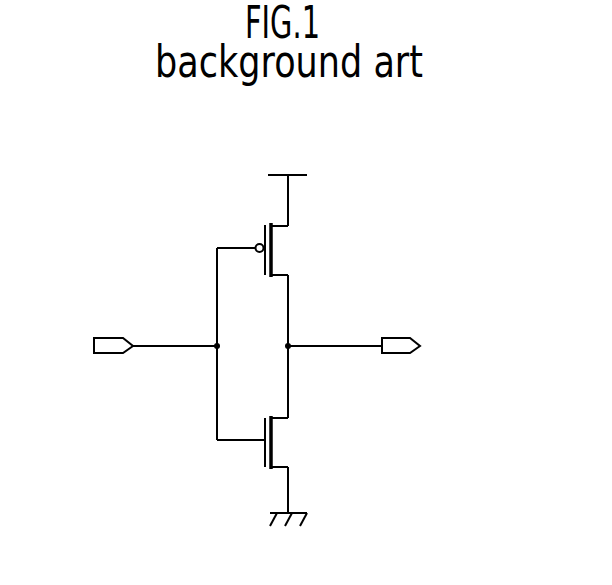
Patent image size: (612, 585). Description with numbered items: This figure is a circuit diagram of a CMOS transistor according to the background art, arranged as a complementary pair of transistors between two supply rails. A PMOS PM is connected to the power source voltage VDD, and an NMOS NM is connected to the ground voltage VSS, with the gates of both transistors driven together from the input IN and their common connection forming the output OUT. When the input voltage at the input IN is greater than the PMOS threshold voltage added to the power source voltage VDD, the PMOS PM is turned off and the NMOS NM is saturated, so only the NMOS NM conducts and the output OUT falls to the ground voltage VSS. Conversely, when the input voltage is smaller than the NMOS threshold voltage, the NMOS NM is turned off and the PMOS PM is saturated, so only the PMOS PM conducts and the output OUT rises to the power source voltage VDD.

The power source voltage VDD is at (287, 183).
The PMOS PM is at (271, 250).
The NMOS NM is at (272, 442).
The input IN is at (142, 347).
The output OUT is at (380, 347).
The ground voltage VSS is at (288, 536).